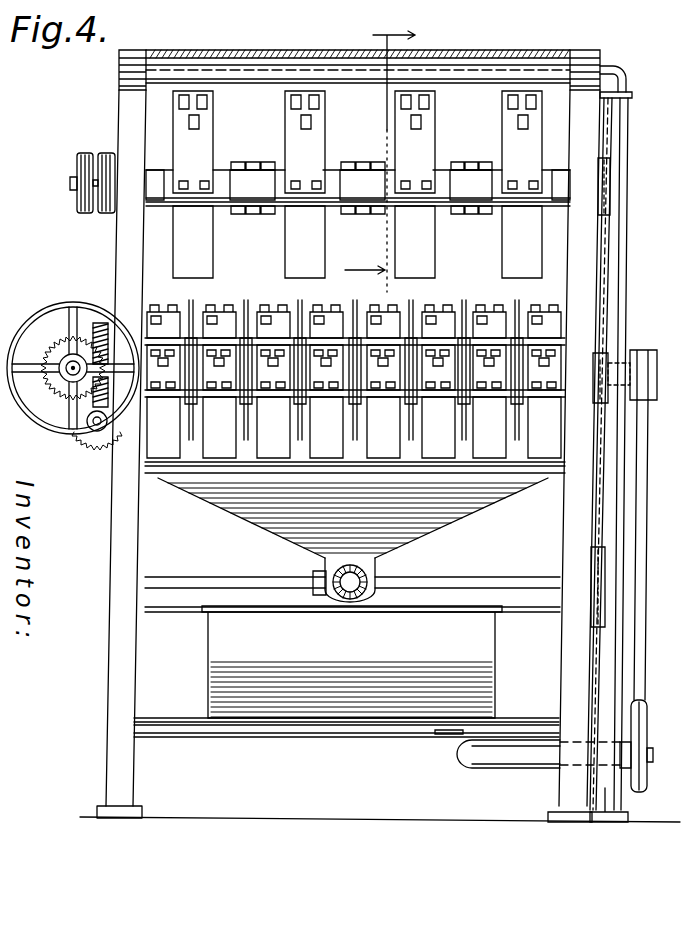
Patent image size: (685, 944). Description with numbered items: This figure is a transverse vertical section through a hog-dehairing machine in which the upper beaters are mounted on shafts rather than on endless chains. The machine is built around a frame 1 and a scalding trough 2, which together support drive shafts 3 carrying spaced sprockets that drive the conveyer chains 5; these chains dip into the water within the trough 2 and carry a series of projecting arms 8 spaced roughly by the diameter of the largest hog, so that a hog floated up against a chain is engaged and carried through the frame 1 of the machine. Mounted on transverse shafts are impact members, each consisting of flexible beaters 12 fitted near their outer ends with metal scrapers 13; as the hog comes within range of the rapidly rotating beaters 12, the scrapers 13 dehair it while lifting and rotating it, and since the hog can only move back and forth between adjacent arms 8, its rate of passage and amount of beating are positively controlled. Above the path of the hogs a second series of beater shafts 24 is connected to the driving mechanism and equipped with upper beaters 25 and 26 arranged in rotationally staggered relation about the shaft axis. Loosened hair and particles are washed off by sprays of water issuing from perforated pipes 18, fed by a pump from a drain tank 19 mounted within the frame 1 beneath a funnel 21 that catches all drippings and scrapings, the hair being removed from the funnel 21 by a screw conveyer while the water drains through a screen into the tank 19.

The frame 1 is at (583, 284).
The scalding trough 2 is at (600, 722).
The drive shafts 3 is at (625, 365).
The conveyer chains 5 is at (380, 151).
The projecting arms 8 is at (353, 434).
The flexible beaters 12 is at (168, 490).
The metal scrapers 13 is at (449, 312).
The perforated pipes 18 is at (528, 78).
The drain tank 19 is at (469, 672).
The funnel 21 is at (433, 508).
The beater shafts 24 is at (75, 183).
The beaters 25 is at (508, 137).
The beaters 26 is at (470, 210).